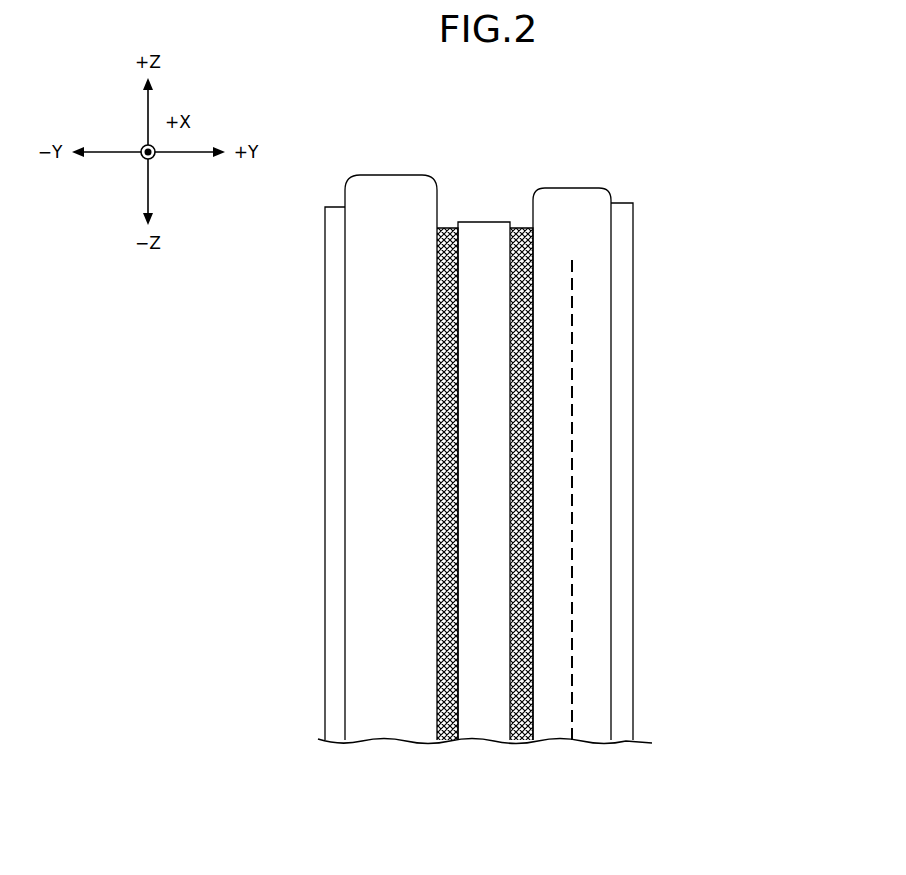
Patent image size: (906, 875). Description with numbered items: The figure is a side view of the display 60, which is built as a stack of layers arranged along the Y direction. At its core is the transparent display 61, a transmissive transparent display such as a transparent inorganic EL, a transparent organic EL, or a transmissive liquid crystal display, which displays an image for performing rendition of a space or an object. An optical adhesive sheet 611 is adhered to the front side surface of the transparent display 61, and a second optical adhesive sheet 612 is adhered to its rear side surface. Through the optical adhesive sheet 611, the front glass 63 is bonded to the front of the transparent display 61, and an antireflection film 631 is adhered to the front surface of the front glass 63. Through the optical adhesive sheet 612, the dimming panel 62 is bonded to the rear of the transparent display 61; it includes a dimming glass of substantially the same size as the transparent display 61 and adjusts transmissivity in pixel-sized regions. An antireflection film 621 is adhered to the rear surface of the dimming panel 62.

The display 60 is at (690, 166).
The transparent display 61 is at (487, 708).
The optical adhesive sheet 611 is at (440, 682).
The optical adhesive sheet 612 is at (533, 695).
The dimming panel 62 is at (592, 583).
The antireflection film 621 is at (623, 401).
The front glass 63 is at (387, 623).
The antireflection film 631 is at (331, 377).